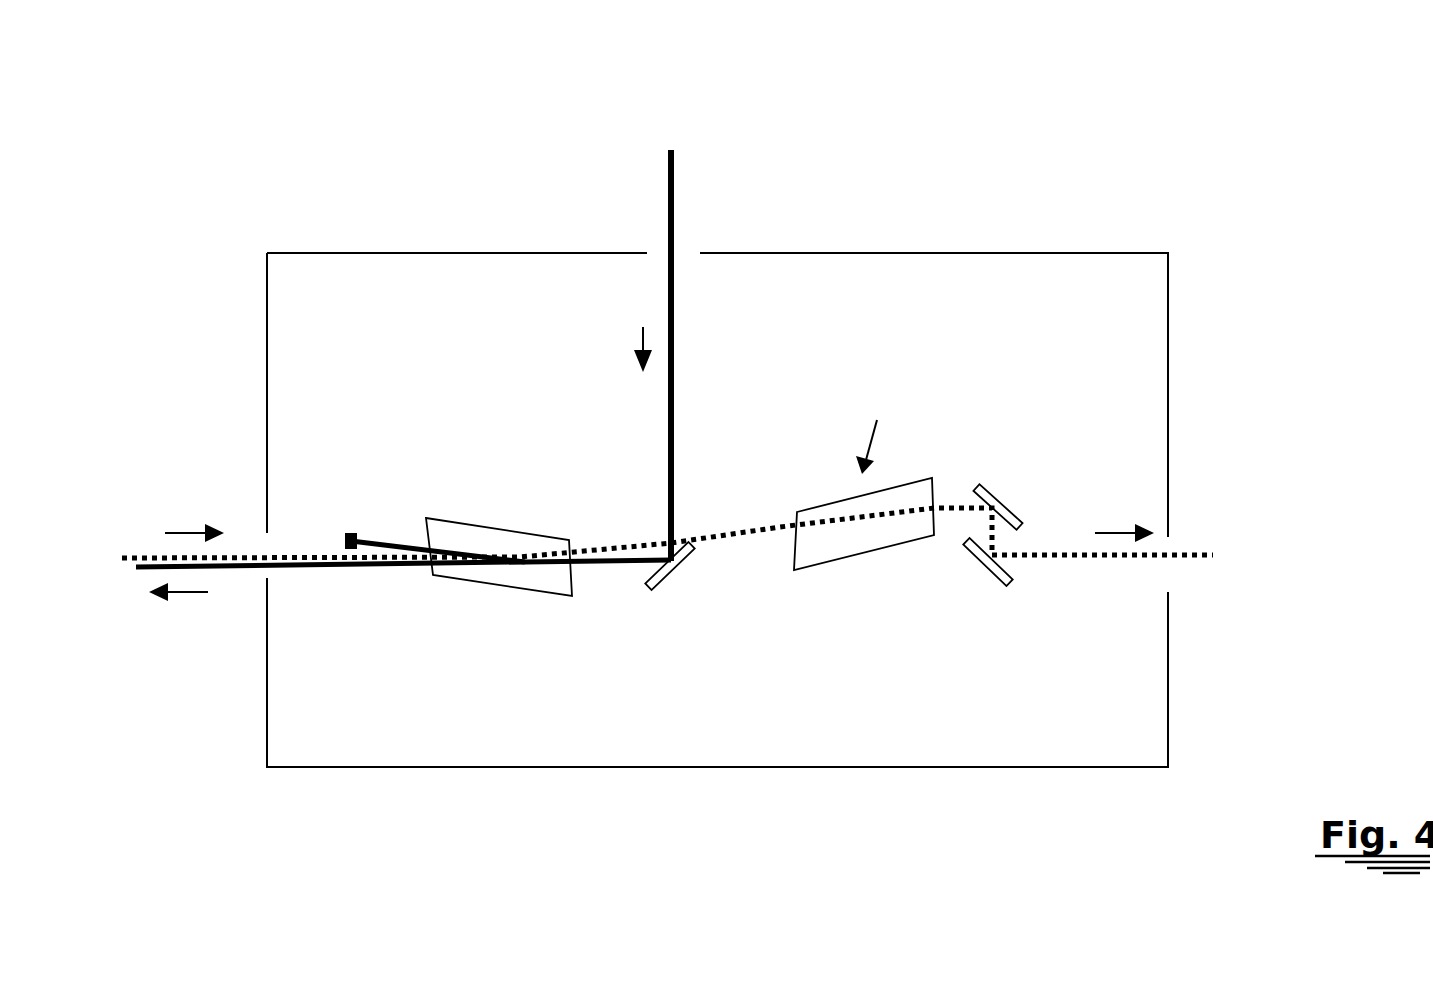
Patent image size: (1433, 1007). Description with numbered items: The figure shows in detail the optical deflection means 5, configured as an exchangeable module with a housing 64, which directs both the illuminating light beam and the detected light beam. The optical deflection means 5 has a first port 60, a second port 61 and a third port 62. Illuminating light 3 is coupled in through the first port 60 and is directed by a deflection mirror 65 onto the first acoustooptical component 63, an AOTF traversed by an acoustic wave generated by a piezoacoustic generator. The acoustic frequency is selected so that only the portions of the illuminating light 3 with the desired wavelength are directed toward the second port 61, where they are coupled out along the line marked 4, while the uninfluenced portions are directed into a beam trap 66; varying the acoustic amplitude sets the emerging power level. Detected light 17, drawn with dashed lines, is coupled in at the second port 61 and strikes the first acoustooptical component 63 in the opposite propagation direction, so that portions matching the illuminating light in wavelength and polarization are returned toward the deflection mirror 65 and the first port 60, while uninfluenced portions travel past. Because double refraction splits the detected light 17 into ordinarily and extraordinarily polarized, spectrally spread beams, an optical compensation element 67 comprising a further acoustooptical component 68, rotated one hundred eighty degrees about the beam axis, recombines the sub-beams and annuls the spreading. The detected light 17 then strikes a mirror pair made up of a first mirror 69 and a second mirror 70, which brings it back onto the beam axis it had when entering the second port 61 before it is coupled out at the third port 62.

The illuminating light 3 is at (674, 210).
The conveying direction / belt line 4 is at (217, 568).
The optical deflection means 5 is at (1067, 135).
The detected light 17 is at (163, 557).
The first port 60 is at (660, 253).
The second port 61 is at (265, 546).
The third port 62 is at (1168, 541).
The first acoustooptical component 63 is at (528, 577).
The housing 64 is at (410, 767).
The deflection mirror 65 is at (682, 562).
The beam trap 66 is at (349, 533).
The optical compensation element 67 is at (878, 432).
The further acoustooptical component 68 is at (848, 532).
The first mirror 69 is at (993, 492).
The second mirror 70 is at (993, 571).